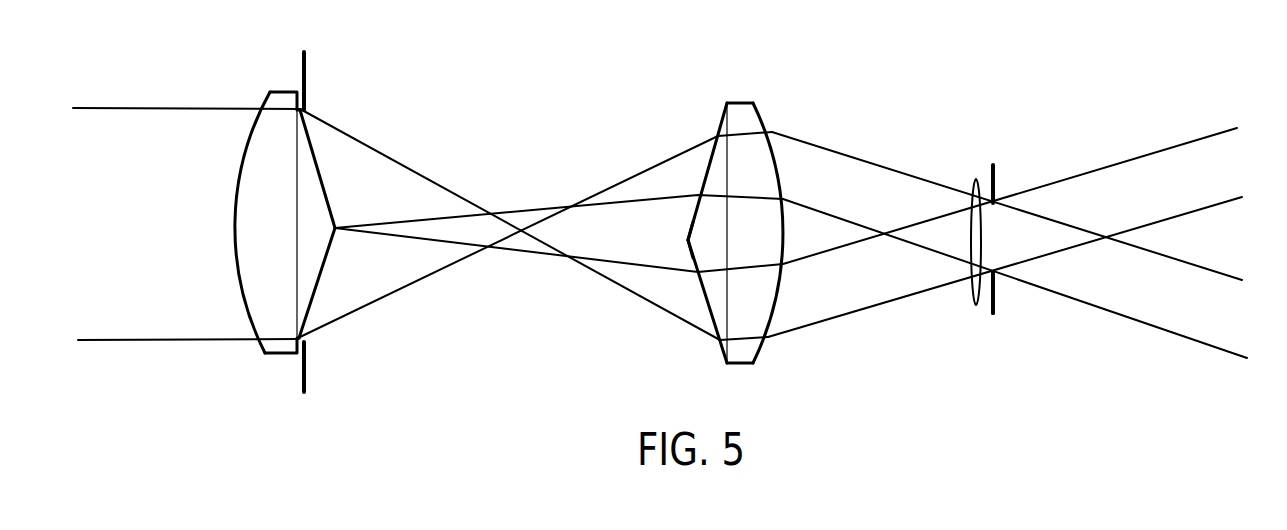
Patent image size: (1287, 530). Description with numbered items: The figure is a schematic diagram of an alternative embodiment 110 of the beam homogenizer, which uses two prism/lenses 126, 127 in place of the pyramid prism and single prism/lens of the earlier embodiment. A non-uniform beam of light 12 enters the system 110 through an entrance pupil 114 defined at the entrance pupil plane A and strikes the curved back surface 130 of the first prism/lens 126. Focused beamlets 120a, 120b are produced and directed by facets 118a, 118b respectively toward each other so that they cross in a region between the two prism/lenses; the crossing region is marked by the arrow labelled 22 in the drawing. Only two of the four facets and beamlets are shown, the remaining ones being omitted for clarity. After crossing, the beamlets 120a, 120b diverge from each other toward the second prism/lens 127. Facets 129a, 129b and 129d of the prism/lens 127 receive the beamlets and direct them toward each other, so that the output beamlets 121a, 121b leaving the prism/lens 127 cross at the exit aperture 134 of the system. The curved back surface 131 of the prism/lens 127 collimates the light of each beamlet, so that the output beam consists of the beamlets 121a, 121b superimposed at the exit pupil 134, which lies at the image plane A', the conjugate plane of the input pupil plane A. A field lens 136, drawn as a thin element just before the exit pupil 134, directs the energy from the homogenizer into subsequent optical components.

The non-uniform beam of light 12 is at (199, 108).
The beam crossover region 22 is at (518, 168).
The beam homogenizer embodiment 110 is at (843, 114).
The entrance pupil 114 is at (188, 222).
The facet 118a is at (312, 128).
The facet 118b is at (307, 320).
The focused beamlet 120a is at (386, 156).
The focused beamlet 120b is at (647, 165).
The output beamlet 121a is at (893, 303).
The output beamlet 121b is at (845, 155).
The prism/lens 126 is at (283, 90).
The prism/lens 127 is at (747, 100).
The facet 129a is at (720, 348).
The facet 129b is at (722, 122).
The facet 129d is at (692, 225).
The curved back surface 130 is at (262, 108).
The curved back surface 131 is at (762, 352).
The exit aperture 134 is at (999, 225).
The field lens 136 is at (975, 178).
The entrance pupil plane A is at (273, 230).
The image plane A' is at (1005, 319).